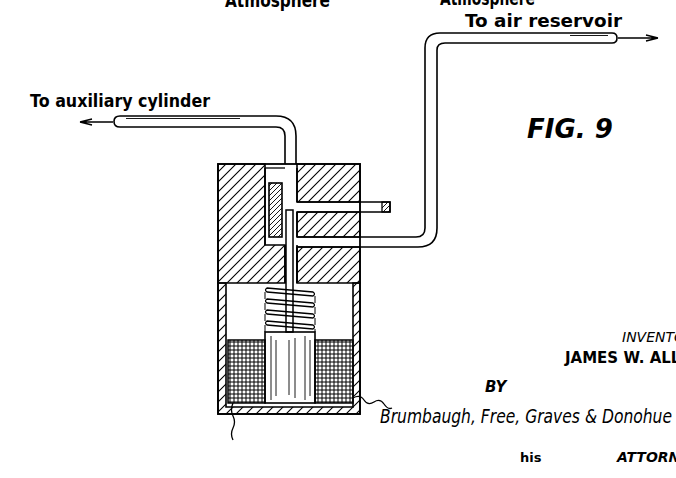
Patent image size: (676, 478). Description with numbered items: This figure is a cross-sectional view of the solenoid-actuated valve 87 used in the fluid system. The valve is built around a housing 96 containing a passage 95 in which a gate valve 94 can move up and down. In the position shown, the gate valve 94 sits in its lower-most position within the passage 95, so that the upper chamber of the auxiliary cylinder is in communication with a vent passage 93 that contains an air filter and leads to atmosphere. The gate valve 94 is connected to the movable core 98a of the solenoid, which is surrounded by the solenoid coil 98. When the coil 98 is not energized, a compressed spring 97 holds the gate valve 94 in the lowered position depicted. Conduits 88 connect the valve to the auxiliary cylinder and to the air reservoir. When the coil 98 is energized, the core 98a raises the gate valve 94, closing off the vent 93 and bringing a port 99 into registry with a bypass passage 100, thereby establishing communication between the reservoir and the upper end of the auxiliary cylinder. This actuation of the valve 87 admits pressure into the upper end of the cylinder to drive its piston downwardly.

The solenoid-actuated valve 87 is at (207, 359).
The conduits 88 is at (238, 113).
The vent passage 93 is at (372, 202).
The gate valve 94 is at (286, 243).
The passage 95 is at (298, 192).
The housing 96 is at (355, 265).
The compressed spring 97 is at (316, 319).
The solenoid coil 98 is at (348, 360).
The movable core 98a is at (286, 395).
The port 99 is at (284, 276).
The bypass passage 100 is at (269, 217).